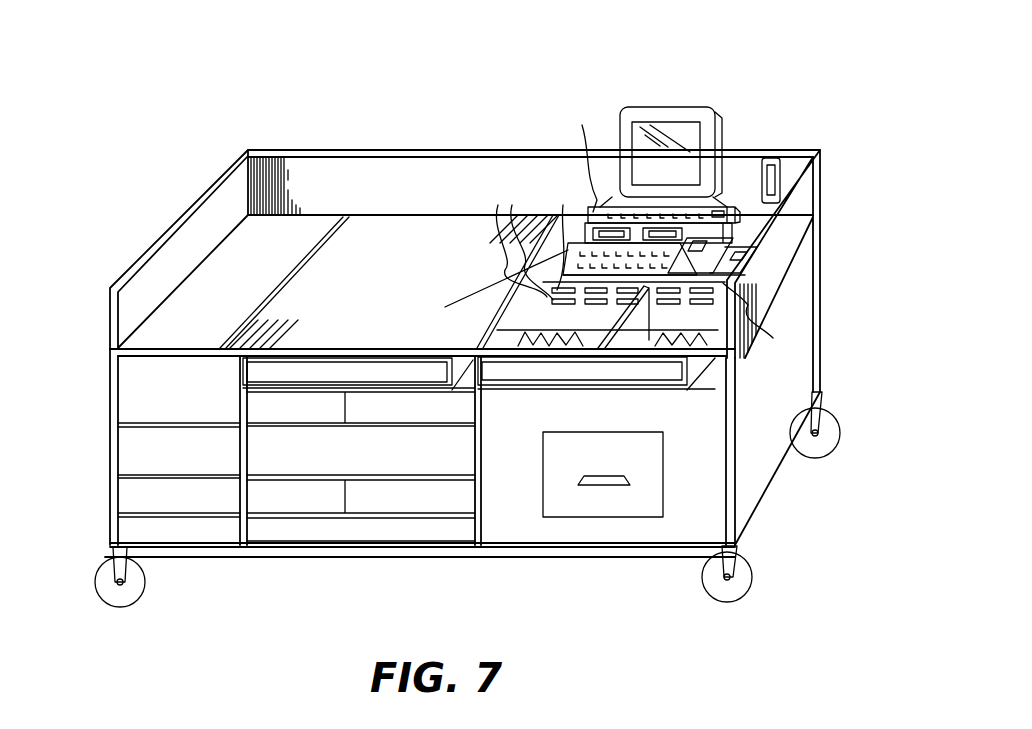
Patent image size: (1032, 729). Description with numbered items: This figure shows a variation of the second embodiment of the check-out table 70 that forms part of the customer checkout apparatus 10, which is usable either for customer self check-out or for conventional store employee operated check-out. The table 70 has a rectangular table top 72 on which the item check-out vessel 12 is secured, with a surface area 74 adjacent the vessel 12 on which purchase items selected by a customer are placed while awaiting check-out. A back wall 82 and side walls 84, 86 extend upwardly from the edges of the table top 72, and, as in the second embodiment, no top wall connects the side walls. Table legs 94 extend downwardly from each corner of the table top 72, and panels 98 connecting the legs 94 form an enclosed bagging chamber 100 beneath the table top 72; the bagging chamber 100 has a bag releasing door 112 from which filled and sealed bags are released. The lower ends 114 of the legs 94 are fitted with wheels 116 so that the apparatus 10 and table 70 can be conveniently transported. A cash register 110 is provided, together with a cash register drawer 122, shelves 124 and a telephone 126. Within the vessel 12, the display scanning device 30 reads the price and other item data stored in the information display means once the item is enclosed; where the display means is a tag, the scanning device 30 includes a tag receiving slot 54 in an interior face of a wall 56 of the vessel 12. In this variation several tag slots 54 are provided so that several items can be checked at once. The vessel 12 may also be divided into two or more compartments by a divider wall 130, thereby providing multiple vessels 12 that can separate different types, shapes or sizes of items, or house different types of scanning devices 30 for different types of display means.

The customer checkout apparatus 10 is at (718, 47).
The item check-out vessel 12 is at (550, 300).
The display scanning device 30 is at (530, 340).
The tag receiving slot 54 is at (638, 270).
The wall 56 is at (552, 232).
The check-out table 70 is at (822, 265).
The table top 72 is at (395, 301).
The surface area 74 is at (295, 243).
The back wall 82 is at (317, 150).
The side wall 84 is at (168, 228).
The side wall 86 is at (818, 190).
The table legs 94 is at (112, 382).
The panels 98 is at (800, 300).
The bagging chamber 100 is at (690, 513).
The cash register 110 is at (568, 159).
The bag releasing door 112 is at (587, 497).
The lower ends 114 is at (112, 530).
The wheels 116 is at (137, 587).
The cash register drawer 122 is at (285, 348).
The shelves 124 is at (140, 492).
The telephone 126 is at (772, 157).
The divider wall 130 is at (612, 350).